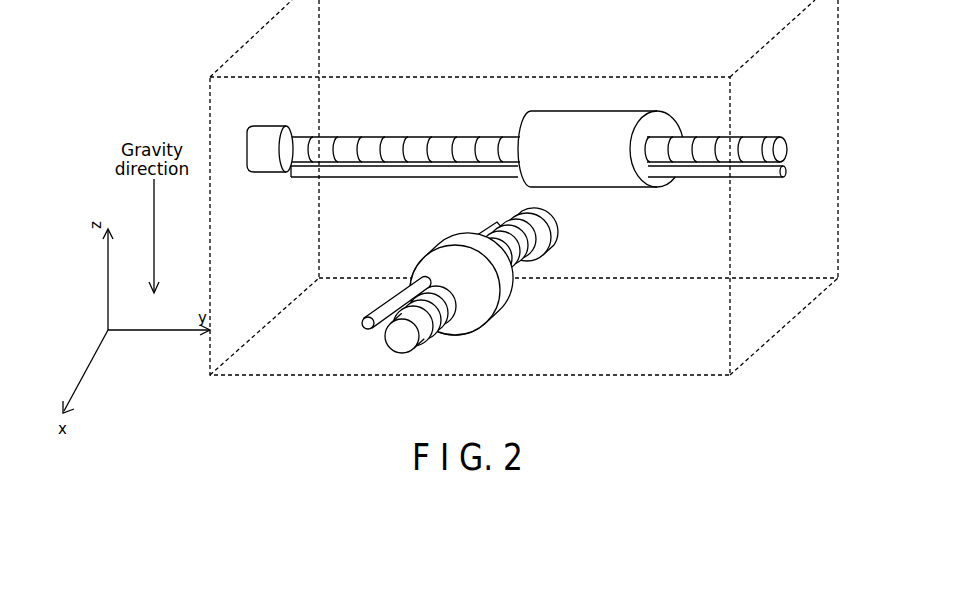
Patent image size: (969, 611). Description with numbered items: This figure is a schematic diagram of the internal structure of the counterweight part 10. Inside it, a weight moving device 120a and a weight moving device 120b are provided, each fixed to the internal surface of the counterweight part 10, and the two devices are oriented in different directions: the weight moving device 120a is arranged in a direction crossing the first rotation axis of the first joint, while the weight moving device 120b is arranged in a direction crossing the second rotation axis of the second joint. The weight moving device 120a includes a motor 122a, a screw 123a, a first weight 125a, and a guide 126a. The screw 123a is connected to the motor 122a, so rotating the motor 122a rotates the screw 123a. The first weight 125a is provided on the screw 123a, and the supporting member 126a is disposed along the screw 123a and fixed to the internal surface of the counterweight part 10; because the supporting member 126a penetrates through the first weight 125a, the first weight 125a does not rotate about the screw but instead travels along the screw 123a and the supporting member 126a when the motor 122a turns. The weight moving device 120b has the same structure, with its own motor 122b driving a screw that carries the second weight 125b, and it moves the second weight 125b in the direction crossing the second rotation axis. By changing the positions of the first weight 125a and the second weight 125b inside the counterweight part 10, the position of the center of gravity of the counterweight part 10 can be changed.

The counterweight part 10 is at (795, 312).
The weight moving device 120a is at (321, 119).
The motor 122a is at (265, 163).
The screw 123a is at (348, 140).
The first weight 125a is at (523, 130).
The guide (supporting member) 126a is at (370, 172).
The weight moving device 120b is at (415, 261).
The motor 122b is at (562, 227).
The second weight 125b is at (500, 300).